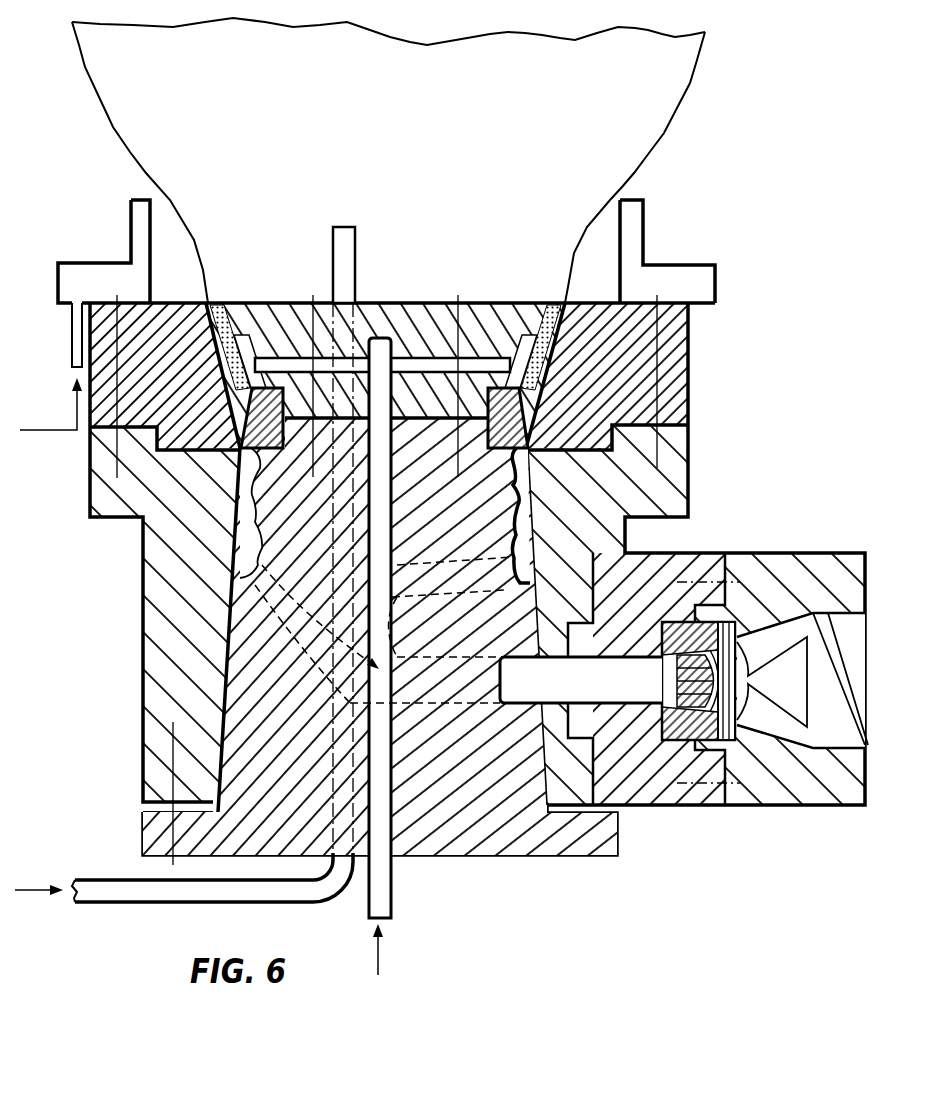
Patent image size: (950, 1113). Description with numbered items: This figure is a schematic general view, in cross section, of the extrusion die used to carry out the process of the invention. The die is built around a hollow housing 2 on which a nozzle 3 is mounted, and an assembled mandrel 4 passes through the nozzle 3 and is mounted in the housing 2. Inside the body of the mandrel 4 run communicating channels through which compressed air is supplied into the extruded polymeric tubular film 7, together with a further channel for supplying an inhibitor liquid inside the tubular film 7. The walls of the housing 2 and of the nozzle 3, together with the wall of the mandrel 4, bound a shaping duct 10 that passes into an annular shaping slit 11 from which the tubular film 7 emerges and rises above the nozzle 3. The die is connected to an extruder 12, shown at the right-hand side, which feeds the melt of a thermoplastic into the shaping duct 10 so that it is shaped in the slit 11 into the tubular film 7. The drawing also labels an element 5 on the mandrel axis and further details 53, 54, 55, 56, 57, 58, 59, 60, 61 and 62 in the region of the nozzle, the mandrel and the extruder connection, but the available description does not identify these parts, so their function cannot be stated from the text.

The hollow housing 2 is at (157, 700).
The nozzle 3 is at (110, 367).
The assembled mandrel 4 is at (410, 328).
The ejector rod 5 is at (343, 257).
The extruded polymeric tubular film 7 is at (113, 88).
The shaping duct 10 is at (240, 490).
The annular shaping slit 11 is at (240, 432).
The extruder 12 is at (802, 772).
The supply channel 53 is at (623, 690).
The hidden passage 54 is at (263, 610).
The central rod 55 is at (391, 865).
The cross bar 56 is at (415, 390).
The left sealing insert 57 is at (233, 388).
The right granular layer 58 is at (525, 335).
The right sealing ring 59 is at (545, 330).
The outer right piece 60 is at (557, 380).
The right clamping block 61 is at (530, 400).
The left clamping block 62 is at (243, 428).